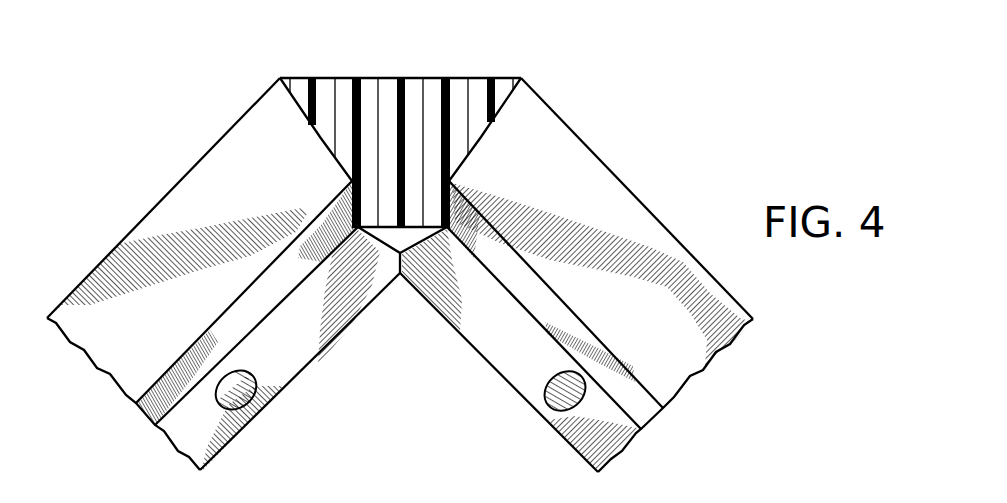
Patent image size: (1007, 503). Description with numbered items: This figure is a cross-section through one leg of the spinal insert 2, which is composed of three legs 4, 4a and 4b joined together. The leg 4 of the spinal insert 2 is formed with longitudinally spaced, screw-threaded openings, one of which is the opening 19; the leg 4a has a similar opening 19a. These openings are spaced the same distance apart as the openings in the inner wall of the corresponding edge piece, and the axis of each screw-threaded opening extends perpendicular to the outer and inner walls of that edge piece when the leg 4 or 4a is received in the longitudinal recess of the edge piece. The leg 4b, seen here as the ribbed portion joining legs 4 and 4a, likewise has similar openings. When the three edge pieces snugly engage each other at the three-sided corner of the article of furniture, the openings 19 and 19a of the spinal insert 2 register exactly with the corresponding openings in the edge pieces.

The spinal insert 2 is at (400, 260).
The leg 4 is at (638, 215).
The leg 4a is at (212, 167).
The leg 4b is at (385, 85).
The screw-threaded opening 19 is at (545, 386).
The opening 19a is at (252, 374).